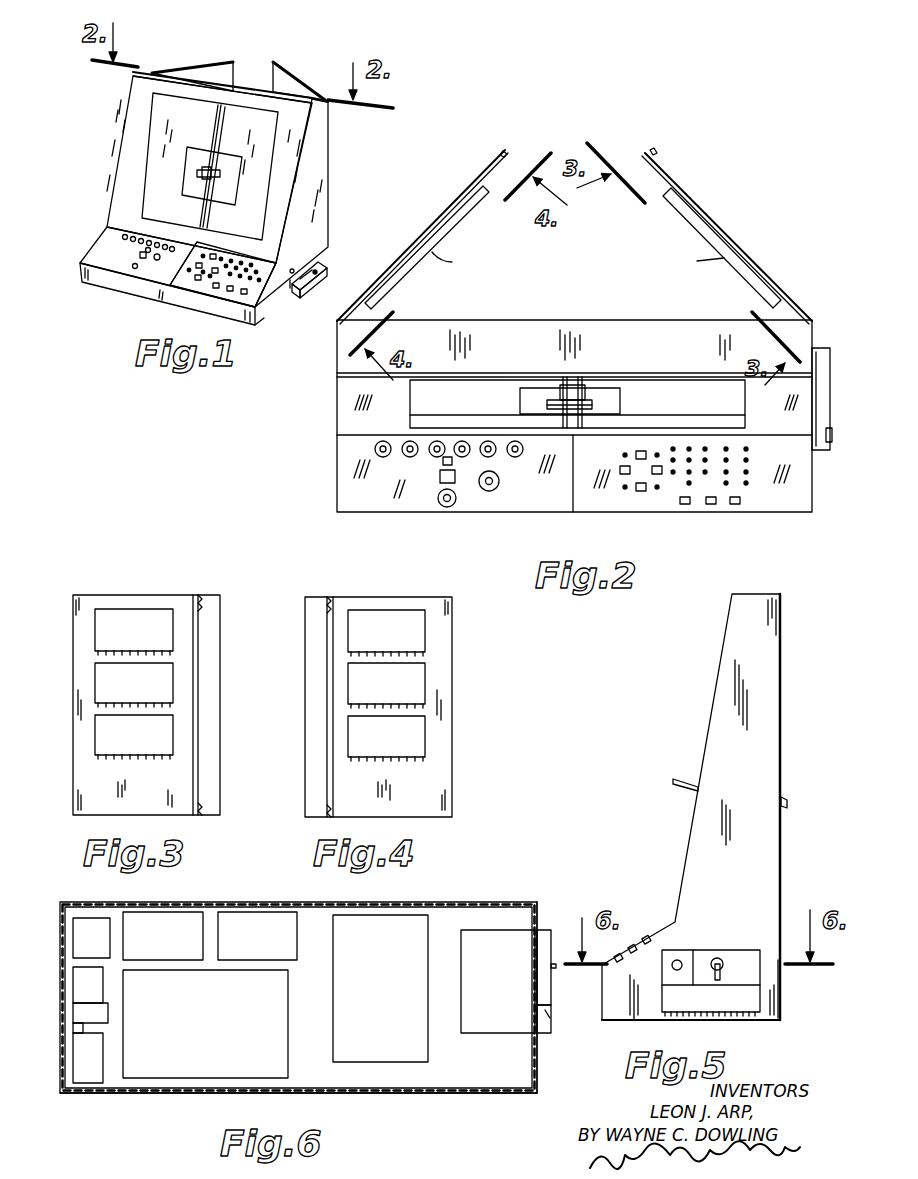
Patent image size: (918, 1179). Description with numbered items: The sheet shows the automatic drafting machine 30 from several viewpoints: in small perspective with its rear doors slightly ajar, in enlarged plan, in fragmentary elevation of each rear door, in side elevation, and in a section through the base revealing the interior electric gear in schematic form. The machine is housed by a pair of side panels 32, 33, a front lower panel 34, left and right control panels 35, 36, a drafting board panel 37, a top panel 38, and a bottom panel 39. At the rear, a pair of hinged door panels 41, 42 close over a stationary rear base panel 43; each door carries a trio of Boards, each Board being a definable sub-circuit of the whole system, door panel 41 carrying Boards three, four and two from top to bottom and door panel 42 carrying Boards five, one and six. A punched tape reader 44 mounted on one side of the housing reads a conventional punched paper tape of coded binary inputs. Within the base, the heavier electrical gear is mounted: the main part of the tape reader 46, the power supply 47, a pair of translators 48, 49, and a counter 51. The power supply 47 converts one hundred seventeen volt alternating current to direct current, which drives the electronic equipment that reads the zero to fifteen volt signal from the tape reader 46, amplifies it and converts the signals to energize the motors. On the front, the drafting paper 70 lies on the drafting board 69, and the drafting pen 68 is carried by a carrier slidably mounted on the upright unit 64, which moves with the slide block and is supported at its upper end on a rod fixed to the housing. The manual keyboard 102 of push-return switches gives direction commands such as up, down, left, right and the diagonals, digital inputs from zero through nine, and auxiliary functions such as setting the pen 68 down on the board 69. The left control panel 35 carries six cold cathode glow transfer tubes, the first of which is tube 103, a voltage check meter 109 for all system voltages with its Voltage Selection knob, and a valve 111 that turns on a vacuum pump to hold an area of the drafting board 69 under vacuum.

In FIG. 1, the automatic drafting machine 30 is at (106, 148).
In FIG. 2, the automatic drafting machine 30 is at (764, 190).
In FIG. 2, the side panel 32 is at (337, 410).
In FIG. 6, the side panel 32 is at (62, 1000).
In FIG. 1, the side panel 33 is at (325, 175).
In FIG. 5, the side panel 33 is at (765, 721).
In FIG. 6, the side panel 33 is at (537, 1070).
In FIG. 1, the front lower panel 34 is at (133, 288).
In FIG. 6, the front lower panel 34 is at (188, 1095).
In FIG. 1, the left control panel 35 is at (110, 247).
In FIG. 2, the left control panel 35 is at (360, 480).
In FIG. 1, the right control panel 36 is at (258, 292).
In FIG. 2, the right control panel 36 is at (795, 497).
In FIG. 1, the drafting board panel 37 is at (125, 183).
In FIG. 2, the drafting board panel 37 is at (355, 395).
In FIG. 1, the top panel 38 is at (152, 72).
In FIG. 2, the top panel 38 is at (690, 325).
In FIG. 5, the bottom panel 39 is at (625, 1022).
In FIG. 1, the hinged door panel 41 is at (228, 62).
In FIG. 2, the hinged door panel 41 is at (477, 170).
In FIG. 4, the hinged door panel 41 is at (407, 597).
In FIG. 1, the hinged door panel 42 is at (300, 82).
In FIG. 2, the hinged door panel 42 is at (668, 168).
In FIG. 3, the hinged door panel 42 is at (160, 594).
In FIG. 5, the stationary rear base panel 43 is at (782, 995).
In FIG. 1, the punched tape reader 44 is at (300, 265).
In FIG. 5, the punched tape reader 44 is at (703, 950).
In FIG. 6, the punched tape reader 44 is at (555, 905).
In FIG. 6, the main part of tape reader 46 is at (493, 942).
In FIG. 6, the power supply 47 is at (388, 930).
In FIG. 6, the translator 48 is at (167, 925).
In FIG. 6, the translator 49 is at (247, 928).
In FIG. 6, the counter 51 is at (209, 1032).
In FIG. 1, the upright unit 64 is at (233, 141).
In FIG. 2, the upright unit 64 is at (538, 394).
In FIG. 1, the drafting pen 68 is at (207, 178).
In FIG. 2, the drafting pen 68 is at (571, 412).
In FIG. 1, the drafting board 69 is at (210, 166).
In FIG. 1, the drafting paper 70 is at (190, 160).
In FIG. 1, the manual keyboard 102 is at (245, 249).
In FIG. 2, the manual keyboard 102 is at (680, 491).
In FIG. 2, the cold cathode glow transfer tube 103 is at (378, 449).
In FIG. 1, the voltage check meter 109 is at (143, 261).
In FIG. 2, the voltage check meter 109 is at (440, 480).
In FIG. 1, the valve 111 is at (157, 261).
In FIG. 2, the valve 111 is at (496, 492).